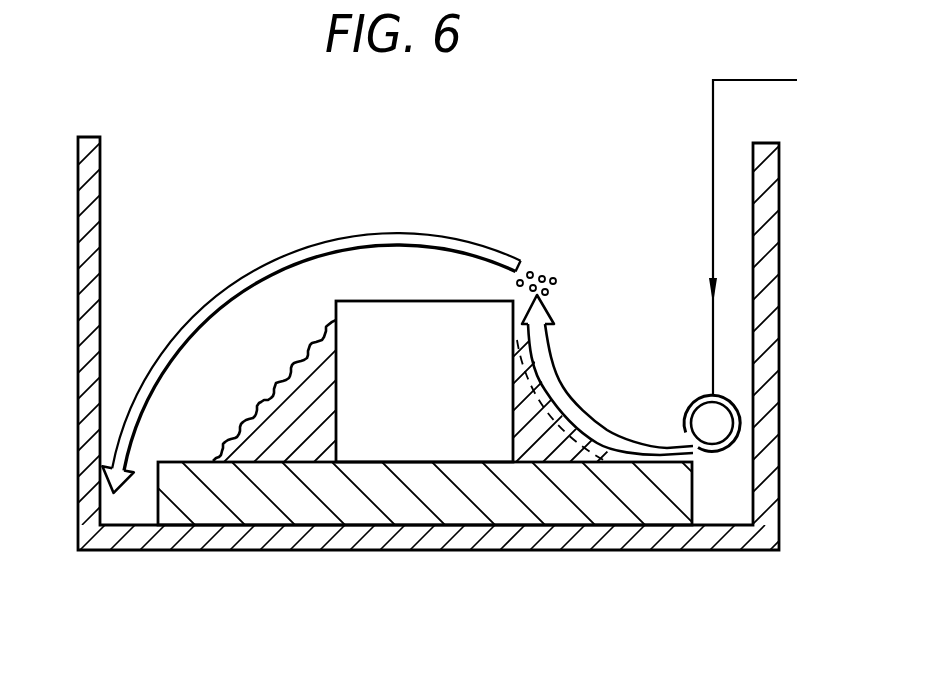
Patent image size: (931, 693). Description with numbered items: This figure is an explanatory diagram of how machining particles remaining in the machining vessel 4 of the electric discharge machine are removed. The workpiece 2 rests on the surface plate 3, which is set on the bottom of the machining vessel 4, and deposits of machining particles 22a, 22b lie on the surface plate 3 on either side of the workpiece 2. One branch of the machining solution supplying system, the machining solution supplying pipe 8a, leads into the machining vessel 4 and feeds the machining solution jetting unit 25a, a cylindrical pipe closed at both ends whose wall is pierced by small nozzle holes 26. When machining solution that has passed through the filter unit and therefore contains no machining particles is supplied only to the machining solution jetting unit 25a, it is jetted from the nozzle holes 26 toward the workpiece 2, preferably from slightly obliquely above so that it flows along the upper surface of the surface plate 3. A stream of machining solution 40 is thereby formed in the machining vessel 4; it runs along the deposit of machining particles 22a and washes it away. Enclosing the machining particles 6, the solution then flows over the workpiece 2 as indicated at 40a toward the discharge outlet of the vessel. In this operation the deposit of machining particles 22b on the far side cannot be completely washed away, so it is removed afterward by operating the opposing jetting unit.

The workpiece 2 is at (421, 452).
The surface plate 3 is at (567, 512).
The machining vessel 4 is at (657, 548).
The machining particles 6 is at (557, 278).
The machining solution supplying pipe 8a is at (713, 212).
The deposit of machining particles 22a is at (523, 455).
The deposit of machining particles 22b is at (270, 453).
The machining solution jetting unit 25a is at (718, 457).
The nozzle holes 26 is at (684, 436).
The stream of machining solution 40 is at (582, 405).
The flow of machining solution over the workpiece 40a is at (420, 230).